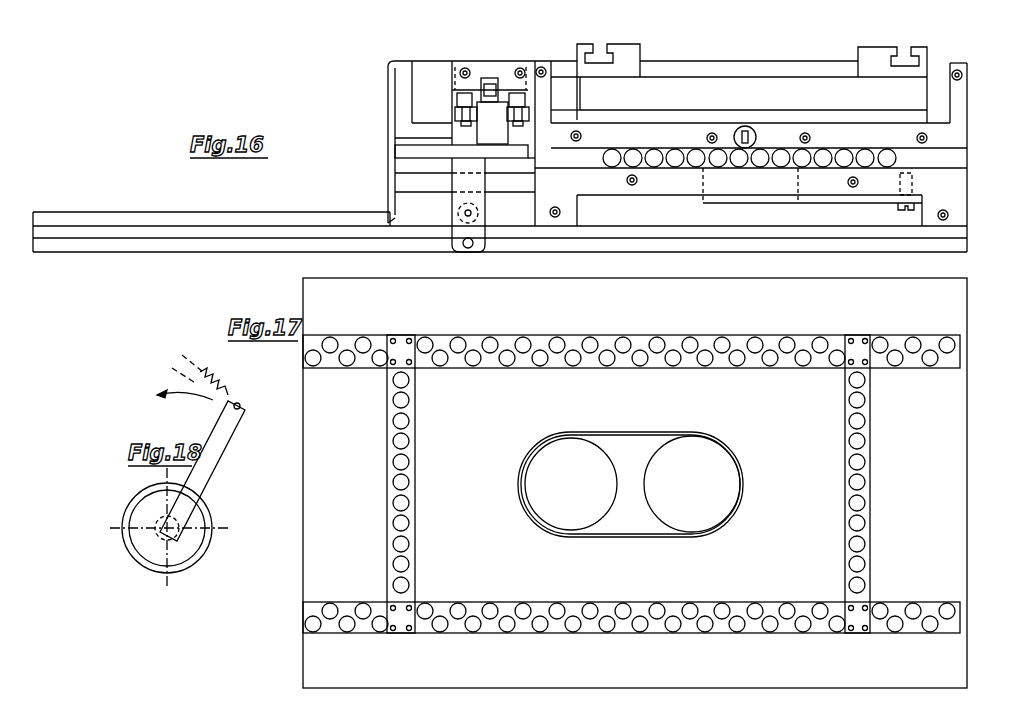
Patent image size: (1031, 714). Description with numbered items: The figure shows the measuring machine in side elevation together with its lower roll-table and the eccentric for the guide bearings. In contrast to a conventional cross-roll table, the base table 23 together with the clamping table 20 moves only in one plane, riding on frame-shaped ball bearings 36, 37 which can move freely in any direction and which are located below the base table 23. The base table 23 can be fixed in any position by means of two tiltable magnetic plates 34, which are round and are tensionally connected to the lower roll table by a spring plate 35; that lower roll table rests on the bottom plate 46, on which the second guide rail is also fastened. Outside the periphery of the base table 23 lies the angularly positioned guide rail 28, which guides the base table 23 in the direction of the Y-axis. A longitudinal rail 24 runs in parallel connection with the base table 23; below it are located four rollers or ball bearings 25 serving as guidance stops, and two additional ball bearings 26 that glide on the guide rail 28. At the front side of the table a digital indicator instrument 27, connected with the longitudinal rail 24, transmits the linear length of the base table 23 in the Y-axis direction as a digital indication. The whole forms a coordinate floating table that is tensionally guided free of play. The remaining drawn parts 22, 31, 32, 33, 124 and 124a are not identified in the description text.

In FIG. 16, the clamping table 20 is at (707, 90).
In FIG. 16, the T-slot clamp 22 is at (641, 48).
In FIG. 16, the base table 23 is at (548, 96).
In FIG. 16, the longitudinal rail 24 is at (520, 65).
In FIG. 16, the rollers or ball bearings 25 is at (521, 97).
In FIG. 16, the ball bearings 26 is at (482, 96).
In FIG. 16, the digital indicator instrument 27 is at (423, 72).
In FIG. 16, the guide rail 28 is at (492, 127).
In FIG. 16, the strut 31 is at (456, 195).
In FIG. 16, the pivot pin 32 is at (458, 225).
In FIG. 16, the base frame 33 is at (565, 205).
In FIG. 17, the base frame 33 is at (330, 472).
In FIG. 16, the tiltable magnetic plates 34 is at (752, 187).
In FIG. 17, the tiltable magnetic plates 34 is at (685, 500).
In FIG. 16, the spring plate 35 is at (798, 203).
In FIG. 16, the frame-shaped ball bearings 36 is at (887, 158).
In FIG. 17, the frame-shaped ball bearings 36 is at (750, 345).
In FIG. 17, the frame-shaped ball bearings 37 is at (475, 345).
In FIG. 16, the bottom plate 46 is at (262, 240).
In FIG. 18, the wheel 124 is at (188, 540).
In FIG. 18, the lever arm 124a is at (222, 437).